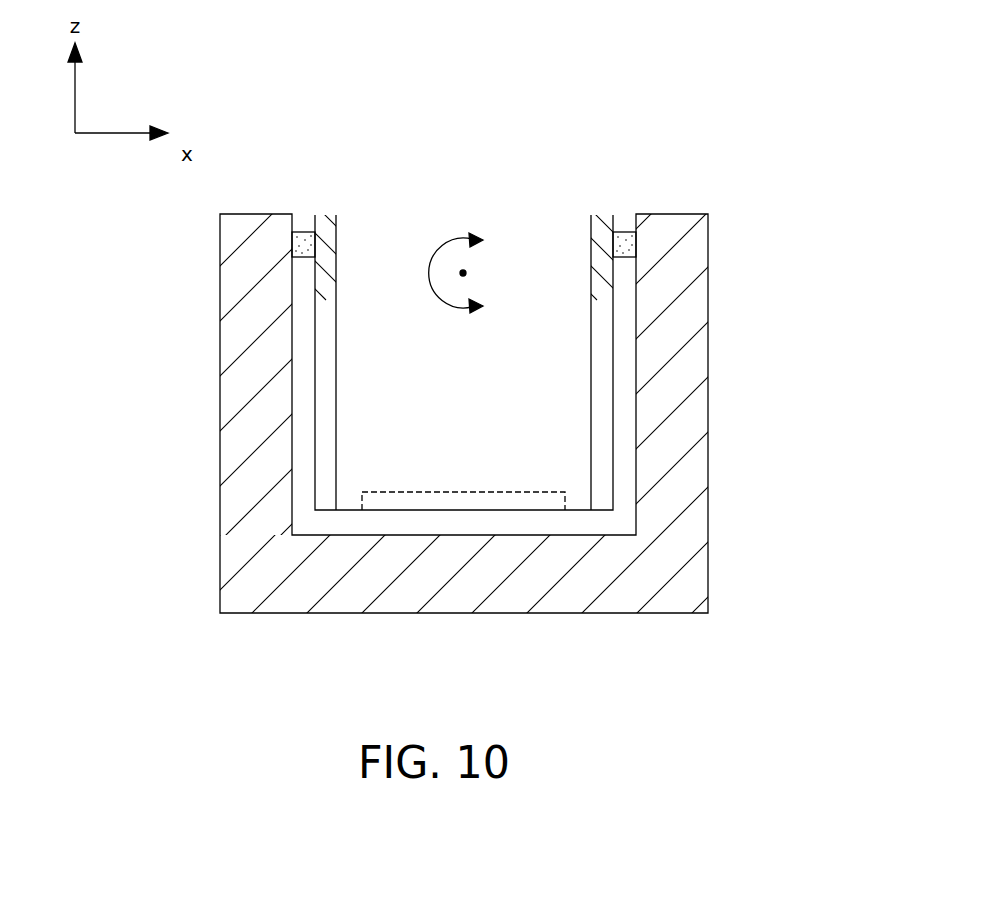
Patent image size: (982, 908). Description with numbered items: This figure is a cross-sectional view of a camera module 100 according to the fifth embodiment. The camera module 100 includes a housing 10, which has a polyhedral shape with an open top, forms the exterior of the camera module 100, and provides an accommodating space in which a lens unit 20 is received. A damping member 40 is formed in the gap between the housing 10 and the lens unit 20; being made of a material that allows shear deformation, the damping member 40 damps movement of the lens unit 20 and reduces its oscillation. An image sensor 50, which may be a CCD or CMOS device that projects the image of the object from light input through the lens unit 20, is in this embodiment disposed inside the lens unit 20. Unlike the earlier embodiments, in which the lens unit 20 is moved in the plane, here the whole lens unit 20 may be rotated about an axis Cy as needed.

The camera module 100 is at (596, 107).
The housing 10 is at (695, 441).
The lens unit 20 is at (613, 320).
The damping member 40 is at (623, 232).
The image sensor 50 is at (462, 500).
The axis Cy is at (463, 273).